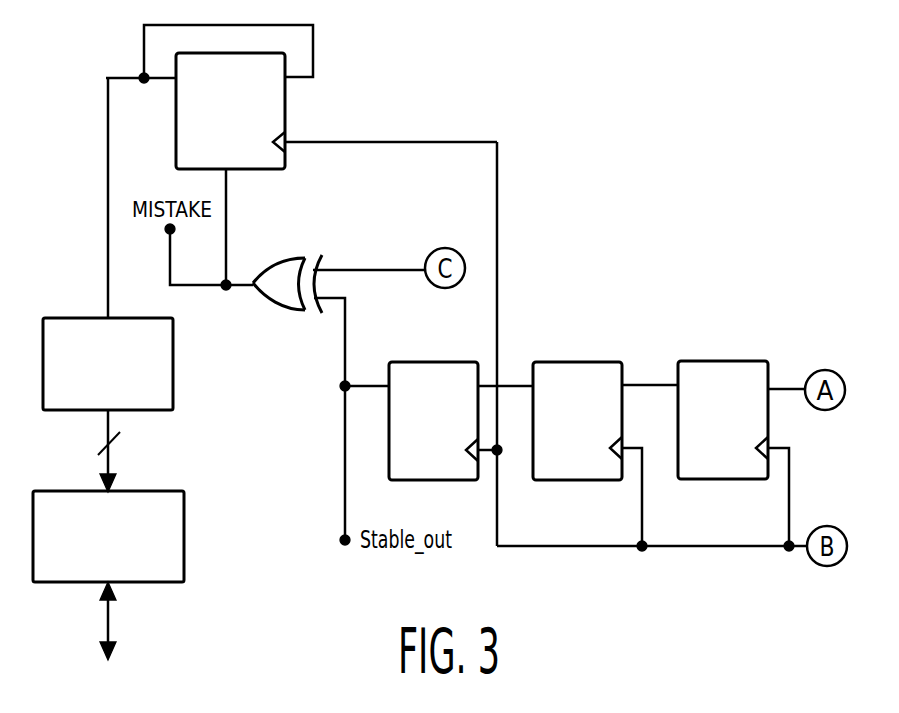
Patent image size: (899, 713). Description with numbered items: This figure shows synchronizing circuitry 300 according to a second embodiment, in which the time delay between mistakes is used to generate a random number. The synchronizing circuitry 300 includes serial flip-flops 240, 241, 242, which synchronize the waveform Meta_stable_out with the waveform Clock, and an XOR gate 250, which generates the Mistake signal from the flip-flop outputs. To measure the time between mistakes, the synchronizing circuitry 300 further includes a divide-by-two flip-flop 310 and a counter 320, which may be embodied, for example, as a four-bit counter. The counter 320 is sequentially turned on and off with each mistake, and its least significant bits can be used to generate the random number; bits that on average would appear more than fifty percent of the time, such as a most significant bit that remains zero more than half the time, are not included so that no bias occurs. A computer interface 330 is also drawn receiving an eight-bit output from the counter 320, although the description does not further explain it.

The synchronizing circuitry 300 is at (676, 238).
The divide-by-two flip-flop 310 is at (287, 112).
The counter 320 is at (174, 360).
The computer interface 330 is at (185, 537).
The XOR gate 250 is at (290, 257).
The serial flip-flop 242 is at (413, 362).
The serial flip-flop 241 is at (572, 362).
The serial flip-flop 240 is at (723, 361).